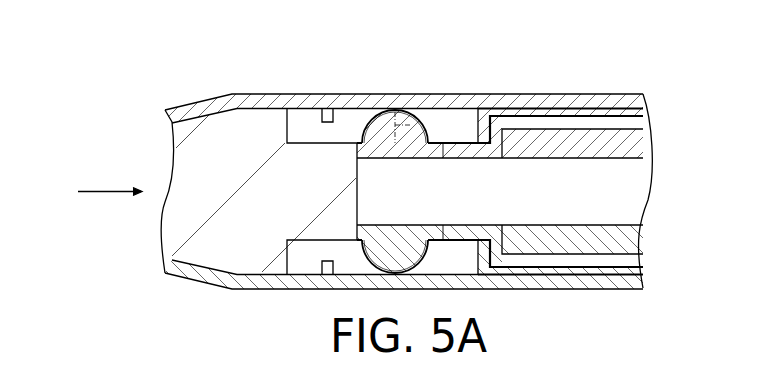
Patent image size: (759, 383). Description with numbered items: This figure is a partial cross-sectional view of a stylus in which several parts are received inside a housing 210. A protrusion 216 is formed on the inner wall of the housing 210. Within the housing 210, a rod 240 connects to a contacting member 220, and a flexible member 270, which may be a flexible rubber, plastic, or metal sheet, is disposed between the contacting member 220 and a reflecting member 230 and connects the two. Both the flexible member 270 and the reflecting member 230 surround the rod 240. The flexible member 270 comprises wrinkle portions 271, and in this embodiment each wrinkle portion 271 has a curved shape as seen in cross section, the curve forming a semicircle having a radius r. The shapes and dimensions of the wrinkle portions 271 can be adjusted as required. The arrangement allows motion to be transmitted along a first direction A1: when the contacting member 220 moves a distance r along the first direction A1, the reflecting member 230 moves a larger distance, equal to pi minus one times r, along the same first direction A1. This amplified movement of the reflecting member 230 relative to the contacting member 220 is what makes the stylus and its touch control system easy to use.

The housing 210 is at (200, 100).
The protrusion 216 is at (456, 106).
The contacting member 220 is at (258, 118).
The reflecting member 230 is at (578, 122).
The rod 240 is at (624, 190).
The flexible member 270 is at (362, 140).
The wrinkle portion 271 is at (321, 270).
The radius r is at (412, 124).
The first direction A1 is at (110, 179).